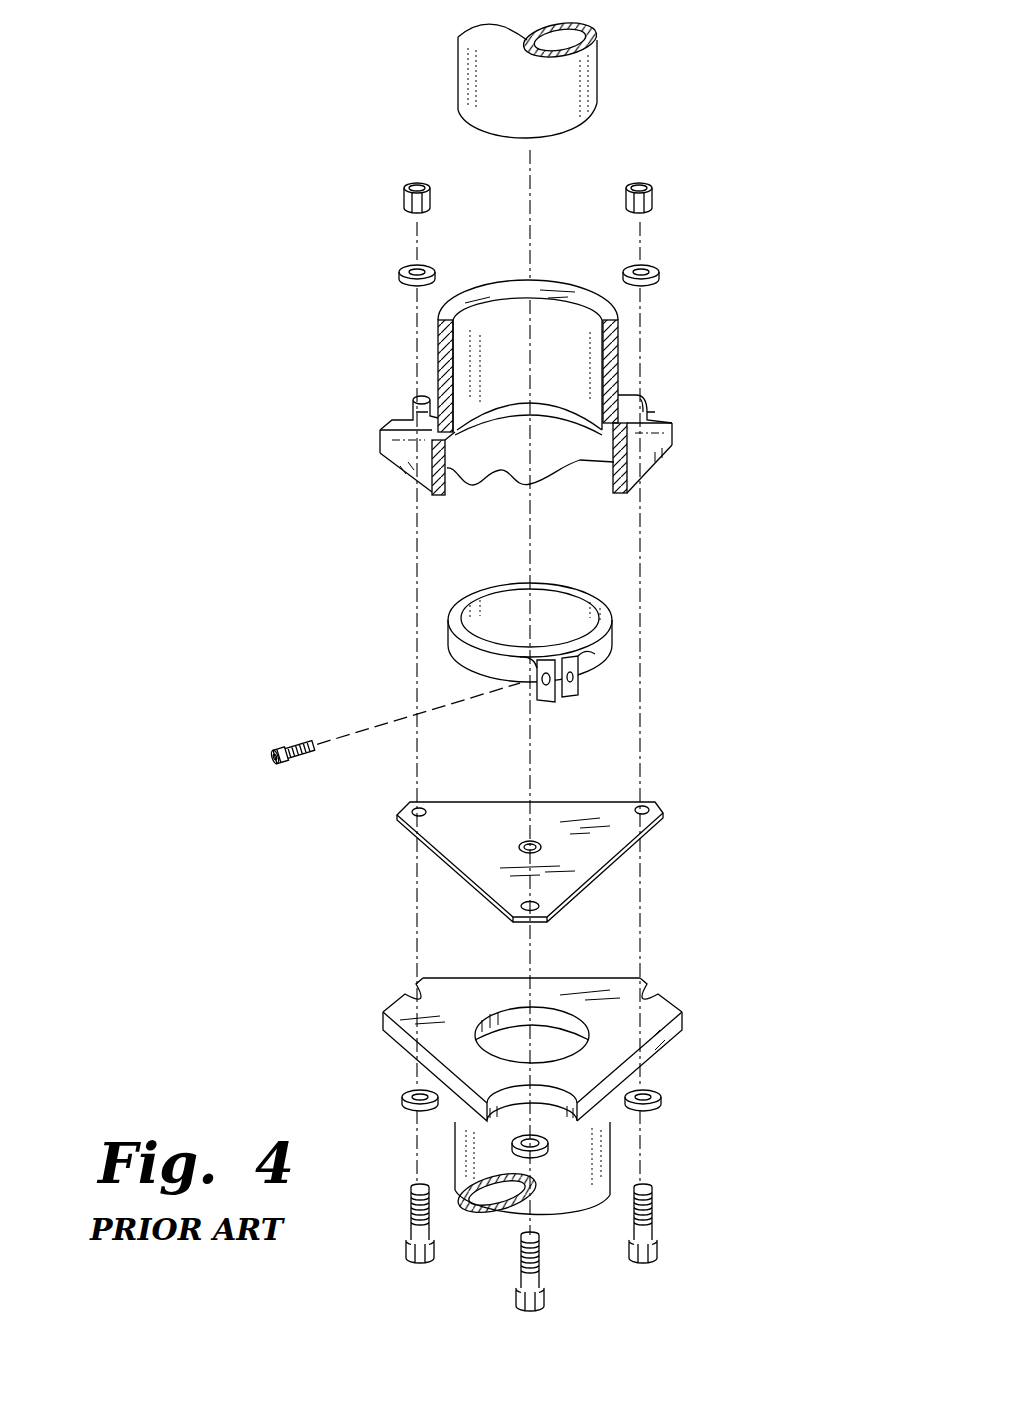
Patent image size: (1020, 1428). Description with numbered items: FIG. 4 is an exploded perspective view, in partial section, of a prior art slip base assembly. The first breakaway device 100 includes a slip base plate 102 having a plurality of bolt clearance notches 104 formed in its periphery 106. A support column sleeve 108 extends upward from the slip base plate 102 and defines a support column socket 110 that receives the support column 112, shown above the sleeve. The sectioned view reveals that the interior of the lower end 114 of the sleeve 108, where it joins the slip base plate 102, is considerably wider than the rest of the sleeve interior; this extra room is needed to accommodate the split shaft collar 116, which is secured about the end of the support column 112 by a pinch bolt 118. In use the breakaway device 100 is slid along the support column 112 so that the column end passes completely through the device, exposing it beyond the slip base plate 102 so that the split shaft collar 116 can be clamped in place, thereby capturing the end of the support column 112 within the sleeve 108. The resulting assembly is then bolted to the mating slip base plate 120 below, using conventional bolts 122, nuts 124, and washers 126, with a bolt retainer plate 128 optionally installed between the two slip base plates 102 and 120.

The first breakaway device 100 is at (190, 420).
The slip base plate 102 is at (541, 439).
The bolt clearance notches 104 is at (411, 405).
The periphery 106 is at (673, 465).
The support column sleeve 108 is at (541, 363).
The support column socket 110 is at (556, 292).
The support column 112 is at (458, 88).
The lower end 114 is at (530, 462).
The split shaft collar 116 is at (583, 585).
The pinch bolt 118 is at (282, 745).
The mating slip base plate 120 is at (487, 980).
The bolts 122 is at (434, 1250).
The nuts 124 is at (405, 198).
The washers 126 is at (400, 273).
The bolt retainer plate 128 is at (667, 818).